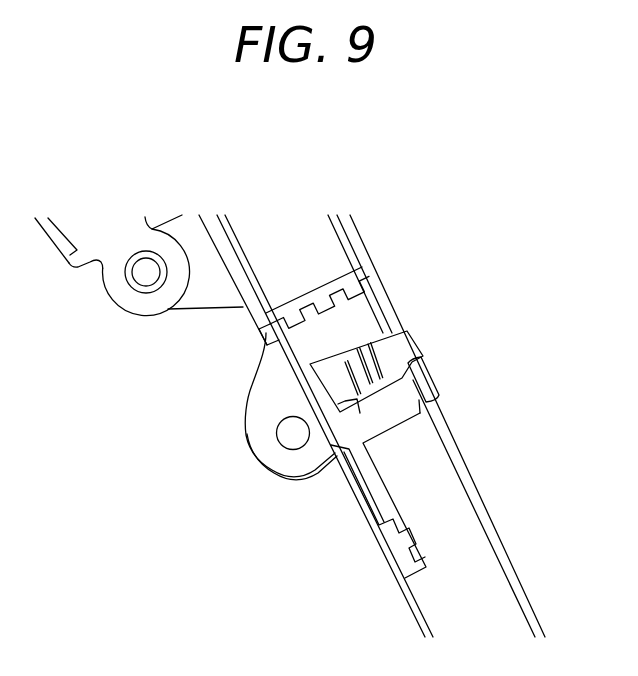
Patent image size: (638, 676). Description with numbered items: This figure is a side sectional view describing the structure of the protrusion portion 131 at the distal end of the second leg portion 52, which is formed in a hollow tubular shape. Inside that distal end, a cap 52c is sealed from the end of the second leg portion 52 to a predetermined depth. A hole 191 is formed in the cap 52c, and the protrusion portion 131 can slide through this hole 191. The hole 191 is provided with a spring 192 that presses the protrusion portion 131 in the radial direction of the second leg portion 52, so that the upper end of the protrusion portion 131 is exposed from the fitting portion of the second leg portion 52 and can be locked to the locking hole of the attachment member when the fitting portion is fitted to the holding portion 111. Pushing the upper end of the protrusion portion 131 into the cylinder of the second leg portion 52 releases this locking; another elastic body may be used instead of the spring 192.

The holding portion 111 is at (357, 238).
The second leg portion 52 is at (487, 522).
The cap 52c is at (358, 316).
The protrusion portion 131 is at (410, 336).
The hole 191 is at (357, 397).
The spring 192 is at (435, 389).